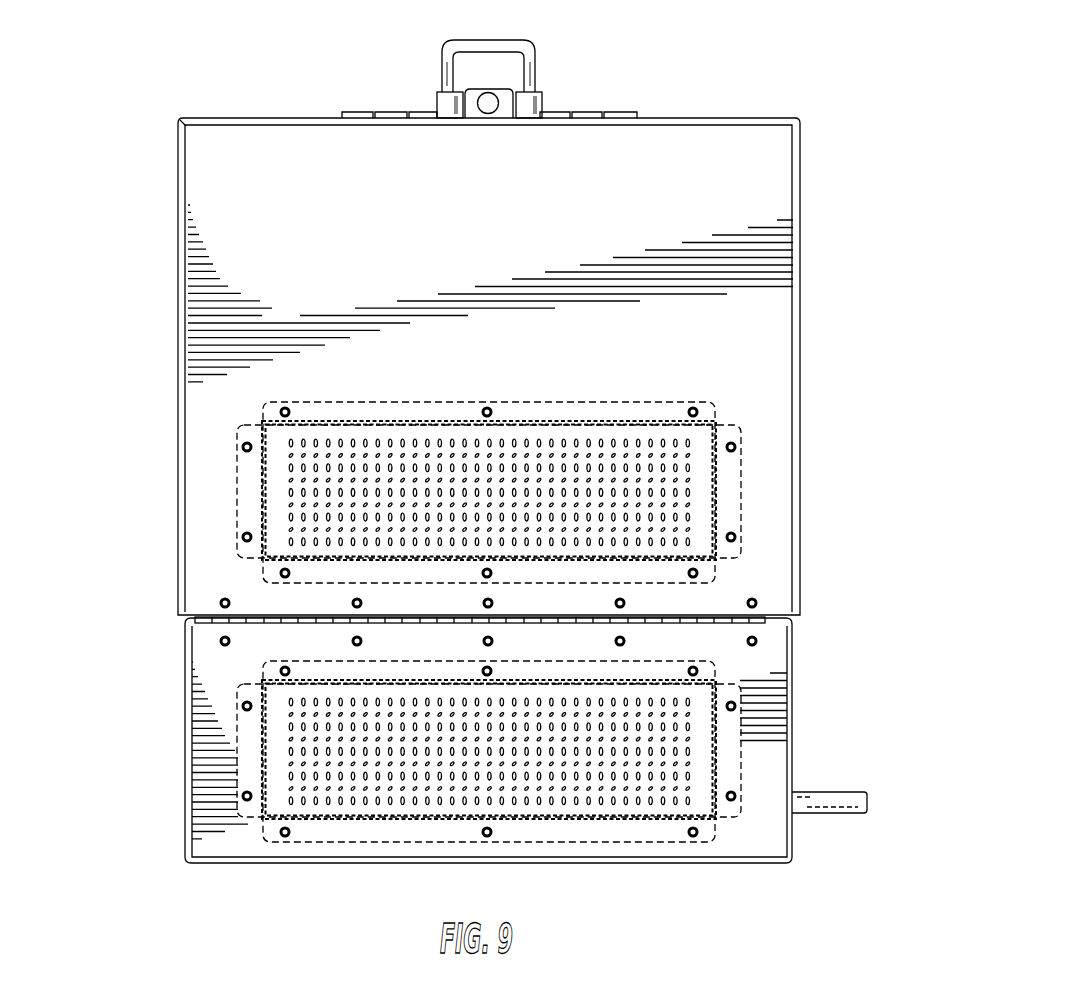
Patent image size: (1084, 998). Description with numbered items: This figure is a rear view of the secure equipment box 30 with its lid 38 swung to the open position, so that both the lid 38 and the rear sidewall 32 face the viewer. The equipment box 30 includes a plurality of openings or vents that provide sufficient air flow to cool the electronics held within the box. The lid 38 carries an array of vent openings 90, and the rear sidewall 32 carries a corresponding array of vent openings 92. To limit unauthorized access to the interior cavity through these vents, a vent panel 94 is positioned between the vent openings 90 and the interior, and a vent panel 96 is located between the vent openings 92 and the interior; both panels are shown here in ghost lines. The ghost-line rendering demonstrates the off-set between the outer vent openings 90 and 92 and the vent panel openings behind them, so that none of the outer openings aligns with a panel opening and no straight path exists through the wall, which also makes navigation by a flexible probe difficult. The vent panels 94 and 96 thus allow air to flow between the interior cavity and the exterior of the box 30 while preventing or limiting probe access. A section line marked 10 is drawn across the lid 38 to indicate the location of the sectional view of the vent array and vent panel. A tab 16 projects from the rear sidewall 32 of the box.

The equipment box 30 is at (143, 368).
The lid 38 is at (762, 331).
The vent panel 94 is at (677, 413).
The vent openings 90 is at (703, 508).
The section line 10- 10 is at (662, 595).
The rear sidewall 32 is at (776, 710).
The vent panel 96 is at (668, 670).
The vent openings 92 is at (652, 793).
The mounting tab 16 is at (840, 795).